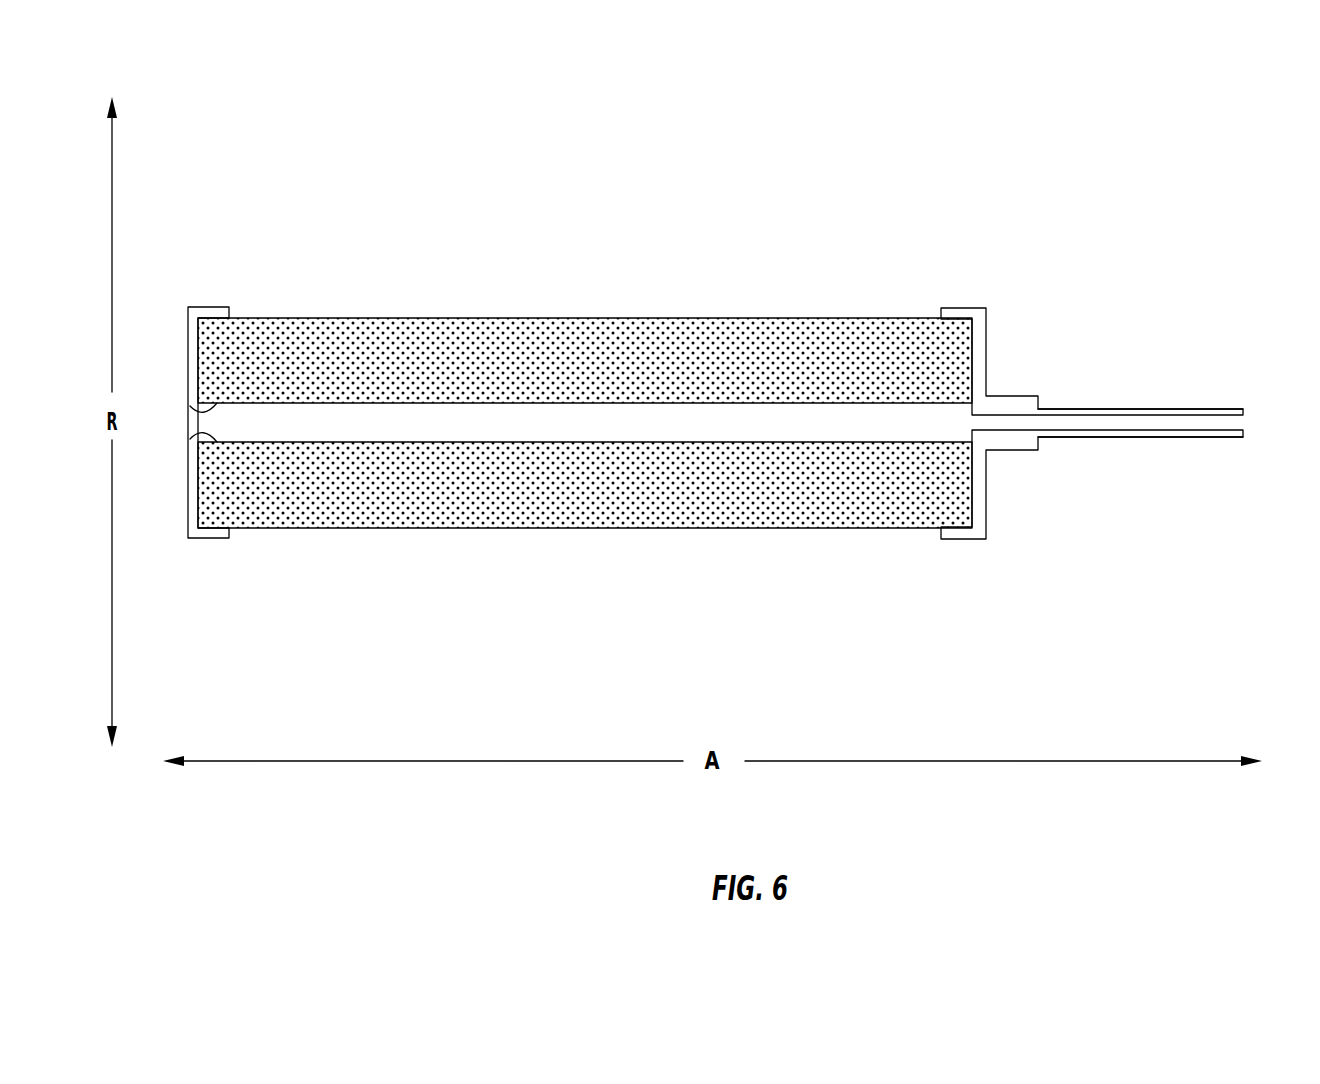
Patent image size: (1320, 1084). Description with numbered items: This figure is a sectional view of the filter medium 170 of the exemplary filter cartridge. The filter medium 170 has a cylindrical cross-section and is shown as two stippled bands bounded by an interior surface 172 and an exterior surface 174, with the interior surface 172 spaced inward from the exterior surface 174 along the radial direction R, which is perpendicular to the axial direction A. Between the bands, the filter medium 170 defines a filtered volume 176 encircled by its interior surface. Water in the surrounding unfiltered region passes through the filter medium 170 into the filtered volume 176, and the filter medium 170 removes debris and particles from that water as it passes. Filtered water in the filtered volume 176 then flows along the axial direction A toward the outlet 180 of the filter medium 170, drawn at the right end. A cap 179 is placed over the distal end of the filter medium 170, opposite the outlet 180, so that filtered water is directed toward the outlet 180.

The filter medium 170 is at (567, 352).
The interior surface 172 is at (190, 406).
The exterior surface 174 is at (838, 319).
The filtered volume 176 is at (592, 435).
The cap 179 is at (209, 538).
The outlet 180 is at (1241, 424).